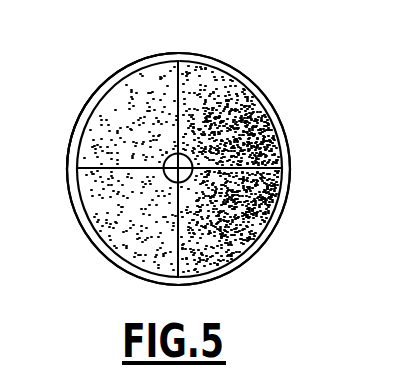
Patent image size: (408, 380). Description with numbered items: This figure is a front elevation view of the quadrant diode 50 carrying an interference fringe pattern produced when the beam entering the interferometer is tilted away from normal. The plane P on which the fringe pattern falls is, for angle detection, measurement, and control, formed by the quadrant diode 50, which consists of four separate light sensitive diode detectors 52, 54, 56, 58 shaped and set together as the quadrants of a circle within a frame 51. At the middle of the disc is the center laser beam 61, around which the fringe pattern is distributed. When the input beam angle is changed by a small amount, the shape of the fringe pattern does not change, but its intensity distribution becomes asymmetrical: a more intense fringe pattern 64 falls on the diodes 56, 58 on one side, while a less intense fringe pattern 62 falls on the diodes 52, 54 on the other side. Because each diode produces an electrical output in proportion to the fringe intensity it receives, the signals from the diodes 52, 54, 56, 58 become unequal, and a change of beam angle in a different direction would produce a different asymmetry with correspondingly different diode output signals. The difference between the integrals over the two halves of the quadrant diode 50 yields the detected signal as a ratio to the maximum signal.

The plane P is at (116, 53).
The quadrant diode 50 is at (271, 84).
The frame 51 is at (81, 114).
The light sensitive diode detector 52 is at (105, 97).
The light sensitive diode detector 54 is at (140, 266).
The light sensitive diode detector 56 is at (228, 74).
The light sensitive diode detector 58 is at (228, 264).
The center laser beam 61 is at (279, 200).
The less intense fringe pattern 62 is at (105, 185).
The more intense fringe pattern 64 is at (280, 141).